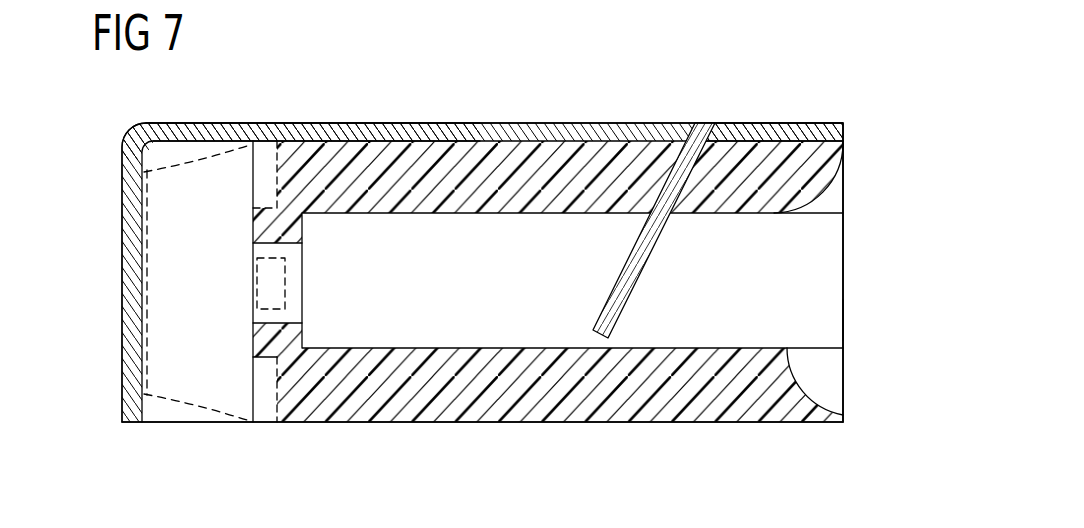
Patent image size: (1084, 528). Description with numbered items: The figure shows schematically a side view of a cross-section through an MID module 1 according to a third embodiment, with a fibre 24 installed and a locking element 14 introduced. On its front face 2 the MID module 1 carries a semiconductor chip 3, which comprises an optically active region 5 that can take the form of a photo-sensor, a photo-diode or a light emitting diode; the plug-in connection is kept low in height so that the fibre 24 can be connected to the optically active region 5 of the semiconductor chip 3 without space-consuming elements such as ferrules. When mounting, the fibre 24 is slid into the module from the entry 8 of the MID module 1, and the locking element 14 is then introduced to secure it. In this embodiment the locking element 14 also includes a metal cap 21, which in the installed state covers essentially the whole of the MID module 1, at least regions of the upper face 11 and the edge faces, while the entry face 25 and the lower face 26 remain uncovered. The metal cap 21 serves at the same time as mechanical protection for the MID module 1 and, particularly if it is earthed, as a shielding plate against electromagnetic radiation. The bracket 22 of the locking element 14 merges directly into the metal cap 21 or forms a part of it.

The MID module 1 is at (888, 130).
The front face 2 is at (258, 162).
The semiconductor chip 3 is at (158, 311).
The optically active region 5 is at (257, 285).
The entry 8 is at (845, 280).
The upper face 11 is at (620, 137).
The locking element 14 is at (637, 287).
The metal cap 21 is at (385, 137).
The bracket 22 is at (790, 123).
The fibre 24 is at (522, 232).
The entry face 25 is at (853, 318).
The lower face 26 is at (676, 429).